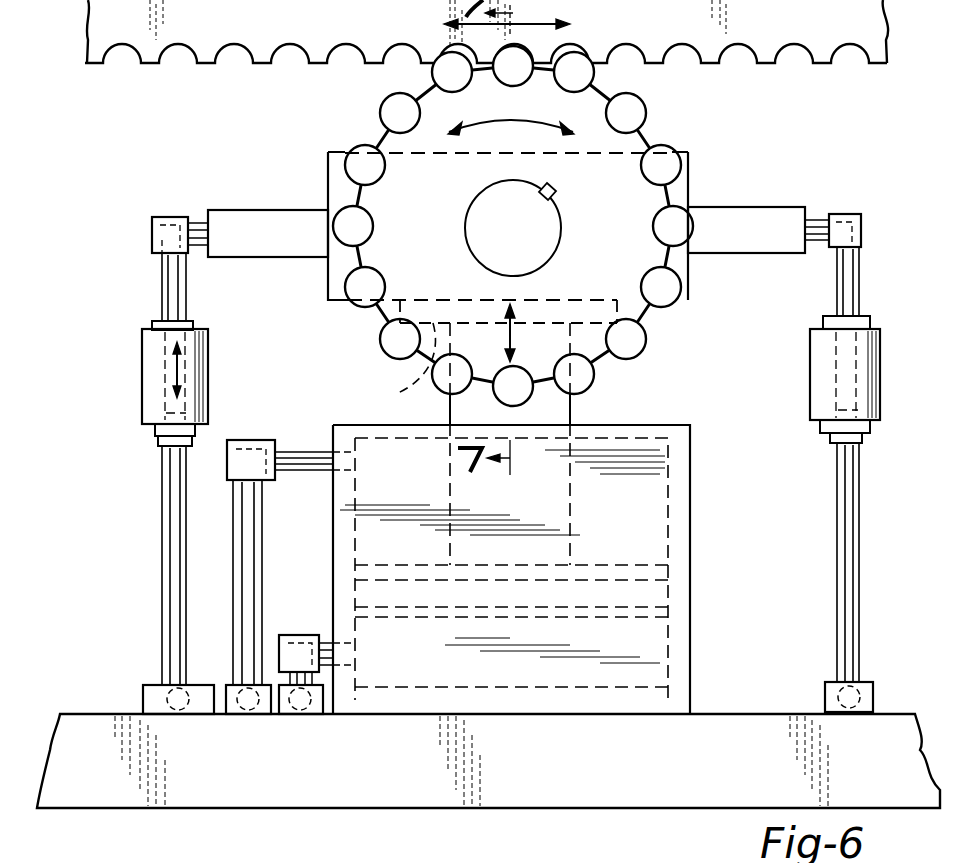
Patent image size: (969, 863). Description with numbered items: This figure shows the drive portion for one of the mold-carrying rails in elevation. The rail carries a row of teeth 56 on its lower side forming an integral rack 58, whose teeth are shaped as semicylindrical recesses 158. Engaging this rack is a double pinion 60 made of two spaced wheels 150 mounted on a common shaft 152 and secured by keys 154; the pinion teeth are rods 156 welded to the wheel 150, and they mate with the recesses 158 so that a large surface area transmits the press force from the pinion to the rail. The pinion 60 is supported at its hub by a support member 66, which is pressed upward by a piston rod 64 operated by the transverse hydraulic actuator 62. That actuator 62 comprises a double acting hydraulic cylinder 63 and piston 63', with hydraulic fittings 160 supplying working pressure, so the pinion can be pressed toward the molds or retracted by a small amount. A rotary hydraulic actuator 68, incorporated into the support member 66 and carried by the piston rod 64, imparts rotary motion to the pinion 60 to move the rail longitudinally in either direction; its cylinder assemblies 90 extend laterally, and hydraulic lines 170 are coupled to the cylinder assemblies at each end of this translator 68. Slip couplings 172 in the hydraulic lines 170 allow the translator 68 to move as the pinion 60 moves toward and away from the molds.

The teeth 56 is at (323, 66).
The rack 58 is at (837, 14).
The pinion 60 is at (532, 226).
The hydraulic actuator 62 is at (694, 537).
The hydraulic cylinder 63 is at (559, 571).
The piston 63' is at (562, 636).
The piston rod 64 is at (573, 332).
The support member 66 is at (405, 444).
The rotary hydraulic actuator 68 is at (690, 181).
The cylinder assembly 90 is at (750, 207).
The wheel 150 is at (646, 143).
The shaft 152 is at (553, 243).
The key 154 is at (556, 196).
The rod 156 is at (656, 332).
The semicylindrical recess 158 is at (745, 60).
The hydraulic fitting 160 is at (293, 634).
The hydraulic line 170 is at (166, 476).
The slip coupling 172 is at (143, 388).